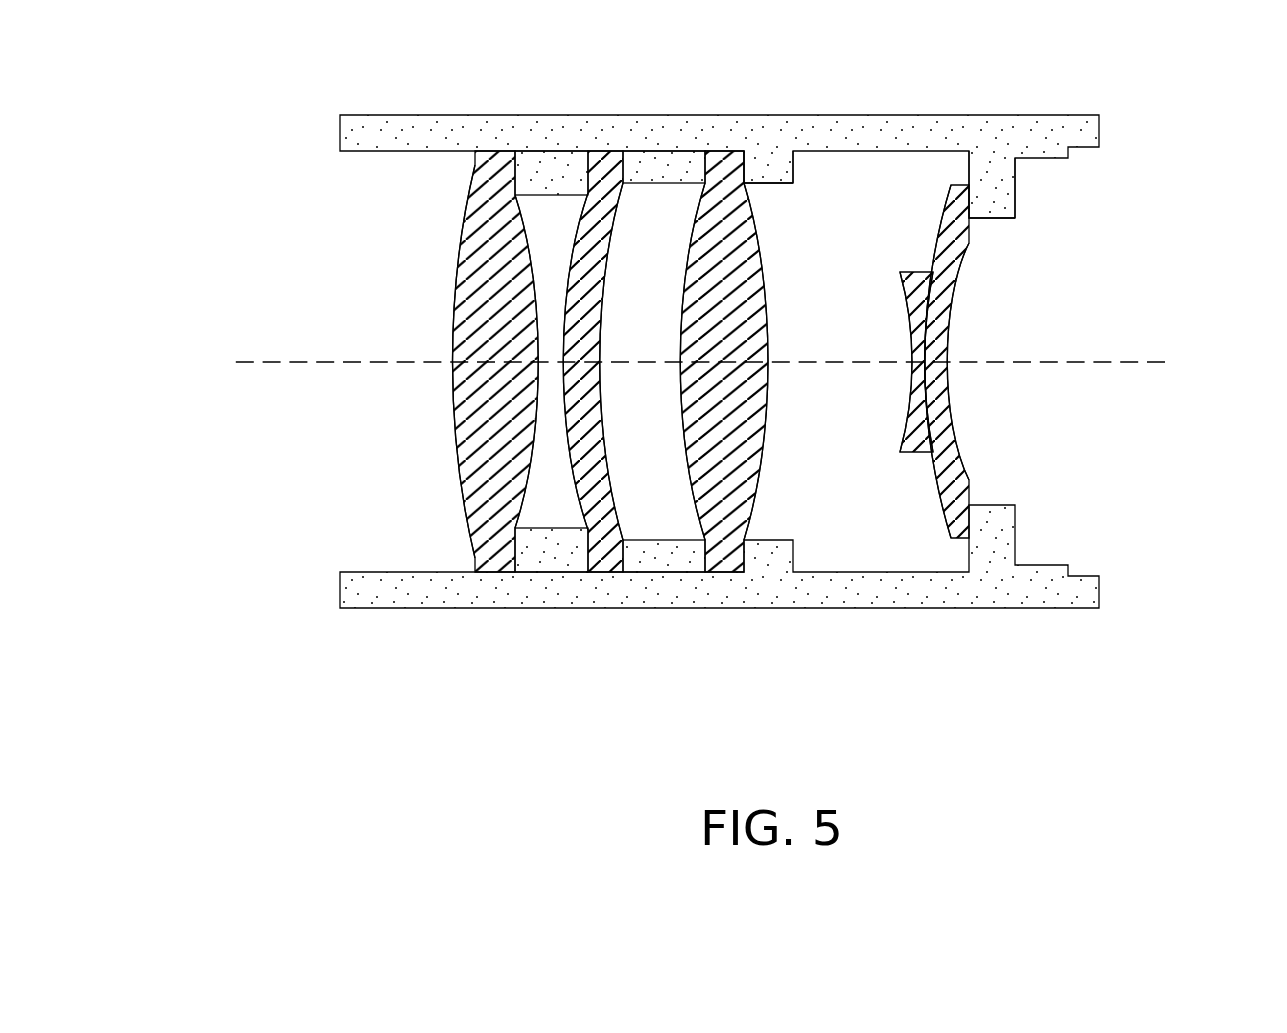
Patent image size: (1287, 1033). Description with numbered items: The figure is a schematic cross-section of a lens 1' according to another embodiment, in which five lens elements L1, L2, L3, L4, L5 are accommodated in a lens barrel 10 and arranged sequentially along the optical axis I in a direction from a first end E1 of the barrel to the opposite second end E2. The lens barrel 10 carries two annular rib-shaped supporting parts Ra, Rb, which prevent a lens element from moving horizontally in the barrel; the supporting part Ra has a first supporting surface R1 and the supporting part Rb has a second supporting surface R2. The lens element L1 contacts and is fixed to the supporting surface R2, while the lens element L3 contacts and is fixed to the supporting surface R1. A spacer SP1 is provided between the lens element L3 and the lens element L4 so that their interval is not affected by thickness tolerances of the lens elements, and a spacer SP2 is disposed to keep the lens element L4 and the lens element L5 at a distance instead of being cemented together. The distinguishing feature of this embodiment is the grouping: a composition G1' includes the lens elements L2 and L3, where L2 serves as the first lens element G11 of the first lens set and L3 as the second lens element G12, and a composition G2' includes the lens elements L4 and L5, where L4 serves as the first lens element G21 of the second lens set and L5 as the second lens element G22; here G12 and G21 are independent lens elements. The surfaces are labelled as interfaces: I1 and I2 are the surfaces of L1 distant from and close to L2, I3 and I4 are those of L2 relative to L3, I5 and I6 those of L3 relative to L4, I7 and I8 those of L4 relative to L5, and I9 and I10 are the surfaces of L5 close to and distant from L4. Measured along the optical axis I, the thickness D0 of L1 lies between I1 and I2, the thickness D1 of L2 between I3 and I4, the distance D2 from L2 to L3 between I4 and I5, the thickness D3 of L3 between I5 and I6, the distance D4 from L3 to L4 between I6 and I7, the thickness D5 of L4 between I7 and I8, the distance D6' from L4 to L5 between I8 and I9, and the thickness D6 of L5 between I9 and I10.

The lens barrel 10 is at (1072, 128).
The lens 1' is at (1274, 679).
The optical axis I is at (1150, 360).
The first end E1 is at (1208, 115).
The second end E2 is at (224, 110).
The supporting surface R1 is at (740, 166).
The supporting surface R2 is at (964, 161).
The supporting part Ra is at (783, 172).
The supporting part Rb is at (1008, 198).
The spacer SP1 is at (643, 160).
The spacer SP2 is at (549, 160).
The lens element L1 is at (954, 540).
The lens element L2 is at (917, 452).
The lens element L3 is at (724, 560).
The lens element L4 is at (608, 555).
The lens element L5 is at (490, 560).
The interface I1 is at (970, 248).
The interface I2 is at (950, 223).
The interface I3 is at (928, 330).
The interface I4 is at (909, 322).
The interface I5 is at (761, 260).
The interface I6 is at (685, 280).
The interface I7 is at (608, 257).
The interface I8 is at (571, 254).
The interface I9 is at (530, 263).
The interface I10 is at (452, 307).
The thickness of lens element L1 D0 is at (887, 395).
The thickness of lens element L2 D1 is at (962, 247).
The distance of lens element L2 to lens element L3 D2 is at (910, 362).
The thickness of lens element L3 D3 is at (766, 362).
The distance of lens element L3 to lens element L4 D4 is at (678, 362).
The thickness of lens element L4 D5 is at (527, 329).
The thickness of lens element L5 D6 is at (495, 344).
The distance of lens element L4 to lens element L5 D6' is at (542, 396).
The composition G1' is at (113, 632).
The composition G2' is at (113, 728).
The first lens element of the first lens set G11 is at (186, 617).
The second lens element of the first lens set G12 is at (186, 661).
The first lens element of the second lens set G21 is at (186, 707).
The second lens element of the second lens set G22 is at (186, 752).